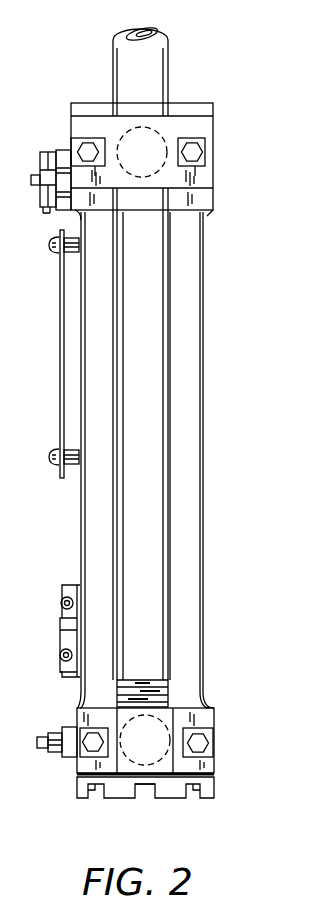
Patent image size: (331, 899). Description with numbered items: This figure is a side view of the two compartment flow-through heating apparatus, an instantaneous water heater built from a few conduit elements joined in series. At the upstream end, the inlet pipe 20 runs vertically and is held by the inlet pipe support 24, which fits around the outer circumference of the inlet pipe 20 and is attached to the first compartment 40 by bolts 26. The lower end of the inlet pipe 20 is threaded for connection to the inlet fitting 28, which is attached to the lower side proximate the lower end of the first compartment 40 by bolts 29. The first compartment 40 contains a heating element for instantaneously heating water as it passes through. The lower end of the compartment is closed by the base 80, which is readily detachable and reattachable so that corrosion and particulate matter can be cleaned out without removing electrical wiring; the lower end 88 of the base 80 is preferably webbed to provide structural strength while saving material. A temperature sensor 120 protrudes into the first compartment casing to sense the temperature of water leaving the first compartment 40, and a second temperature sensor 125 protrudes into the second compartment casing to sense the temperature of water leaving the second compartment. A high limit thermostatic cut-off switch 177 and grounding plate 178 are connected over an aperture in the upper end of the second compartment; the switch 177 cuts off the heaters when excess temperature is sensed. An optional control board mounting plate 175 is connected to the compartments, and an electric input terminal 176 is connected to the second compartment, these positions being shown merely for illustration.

The inlet pipe 20 is at (150, 385).
The inlet pipe support 24 is at (203, 130).
The bolts 26 is at (88, 152).
The inlet fitting 28 is at (210, 717).
The bolts 29 is at (203, 743).
The first compartment 40 is at (192, 338).
The base 80 is at (213, 790).
The lower end 88 is at (153, 795).
The temperature sensor 120 is at (48, 177).
The temperature sensor 125 is at (55, 733).
The control board mounting plate 175 is at (62, 325).
The electric input terminal 176 is at (67, 608).
The high limit thermostatic cut-off switch 177 is at (44, 207).
The grounding plate 178 is at (63, 147).